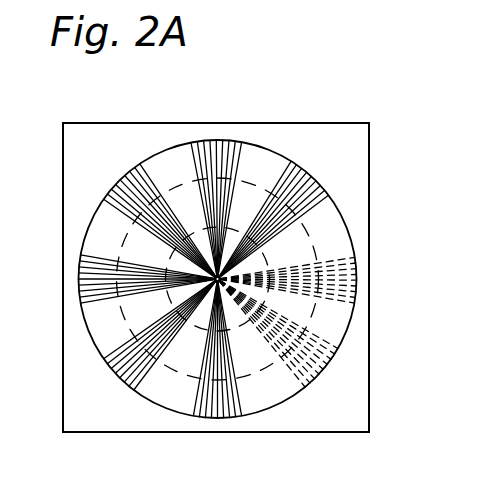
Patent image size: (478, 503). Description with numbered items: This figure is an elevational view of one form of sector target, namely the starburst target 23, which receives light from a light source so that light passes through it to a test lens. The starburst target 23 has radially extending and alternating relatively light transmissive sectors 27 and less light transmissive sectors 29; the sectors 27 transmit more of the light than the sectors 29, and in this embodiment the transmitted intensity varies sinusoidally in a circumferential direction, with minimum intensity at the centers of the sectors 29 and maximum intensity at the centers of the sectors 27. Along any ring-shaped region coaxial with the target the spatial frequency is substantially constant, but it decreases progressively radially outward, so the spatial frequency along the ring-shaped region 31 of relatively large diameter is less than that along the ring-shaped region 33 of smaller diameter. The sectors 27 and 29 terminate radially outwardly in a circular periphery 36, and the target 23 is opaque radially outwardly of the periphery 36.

The starburst target 23 is at (360, 121).
The relatively light transmissive sectors 27 is at (175, 158).
The less light transmissive sectors 29 is at (336, 284).
The ring-shaped region of relatively large diameter 31 is at (318, 319).
The ring-shaped region of smaller diameter 33 is at (232, 328).
The circular periphery 36 is at (152, 150).